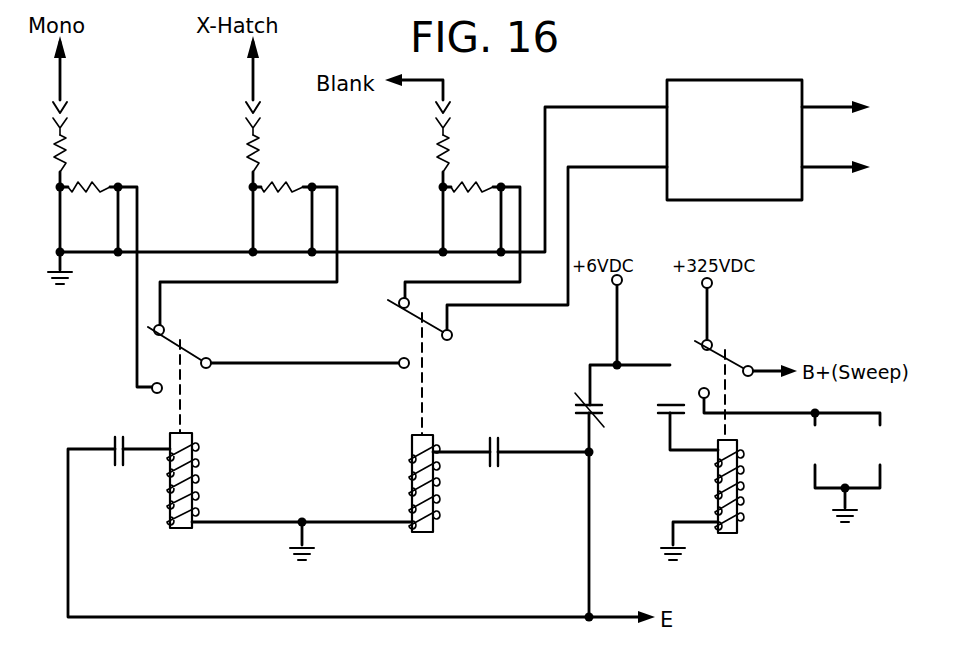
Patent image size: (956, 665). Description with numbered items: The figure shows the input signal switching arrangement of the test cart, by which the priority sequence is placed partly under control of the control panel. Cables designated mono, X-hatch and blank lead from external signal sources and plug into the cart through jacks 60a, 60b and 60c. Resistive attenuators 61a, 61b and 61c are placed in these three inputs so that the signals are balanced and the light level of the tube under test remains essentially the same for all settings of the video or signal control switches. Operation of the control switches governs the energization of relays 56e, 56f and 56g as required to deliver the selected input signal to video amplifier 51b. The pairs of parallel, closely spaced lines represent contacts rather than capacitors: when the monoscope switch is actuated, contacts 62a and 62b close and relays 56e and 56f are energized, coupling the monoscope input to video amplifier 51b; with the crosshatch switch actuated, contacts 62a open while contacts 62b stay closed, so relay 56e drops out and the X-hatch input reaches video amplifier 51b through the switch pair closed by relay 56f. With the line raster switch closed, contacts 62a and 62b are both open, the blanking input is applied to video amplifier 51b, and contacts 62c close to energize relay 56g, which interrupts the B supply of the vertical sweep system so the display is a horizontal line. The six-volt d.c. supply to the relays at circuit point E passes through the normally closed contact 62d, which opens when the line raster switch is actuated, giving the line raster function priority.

The jack 60a is at (64, 127).
The jack 60b is at (257, 128).
The jack 60c is at (446, 128).
The resistive attenuator 61a is at (93, 218).
The resistive attenuator 61b is at (278, 218).
The resistive attenuator 61c is at (466, 218).
The video amplifier 51b is at (740, 80).
The relay 56e is at (193, 465).
The relay 56f is at (410, 460).
The relay 56g is at (738, 478).
The contacts 62a is at (112, 440).
The contacts 62b is at (500, 438).
The contacts 62c is at (668, 416).
The normally closed contact 62d is at (593, 418).